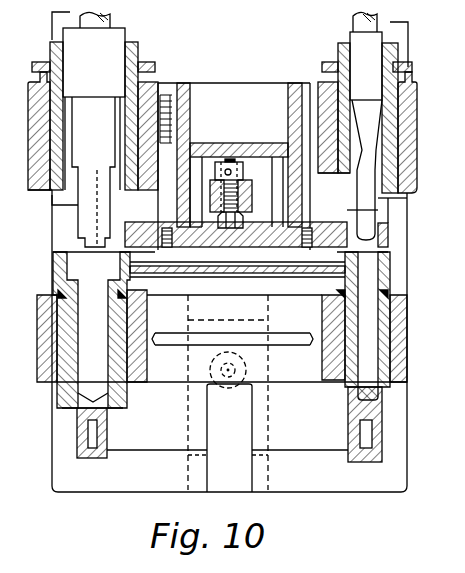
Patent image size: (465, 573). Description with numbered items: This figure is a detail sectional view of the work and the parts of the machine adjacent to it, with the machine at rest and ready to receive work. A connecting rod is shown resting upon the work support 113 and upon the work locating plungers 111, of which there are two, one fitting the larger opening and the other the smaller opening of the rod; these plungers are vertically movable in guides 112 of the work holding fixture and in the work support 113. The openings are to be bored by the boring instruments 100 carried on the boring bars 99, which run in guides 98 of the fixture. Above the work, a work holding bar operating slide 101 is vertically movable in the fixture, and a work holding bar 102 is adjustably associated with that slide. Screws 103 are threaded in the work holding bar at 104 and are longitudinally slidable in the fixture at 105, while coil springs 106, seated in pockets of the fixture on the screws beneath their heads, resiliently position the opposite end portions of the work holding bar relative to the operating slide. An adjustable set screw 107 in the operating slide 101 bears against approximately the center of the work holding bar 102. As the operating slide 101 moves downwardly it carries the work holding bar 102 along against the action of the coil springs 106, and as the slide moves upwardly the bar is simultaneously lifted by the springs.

The guides 98 is at (417, 130).
The boring bars 99 is at (112, 43).
The boring instruments 100 is at (117, 150).
The work holding bar operating slide 101 is at (244, 205).
The work holding bar 102 is at (185, 227).
The screws 103 is at (177, 197).
The threaded connection of screws in work holding bar 104 is at (305, 250).
The sliding portion of screws in fixture 105 is at (272, 140).
The coil springs 106 is at (193, 110).
The adjustable set screw 107 is at (240, 228).
The work locating plungers 111 is at (378, 418).
The guides 112 is at (398, 330).
The work support 113 is at (56, 288).